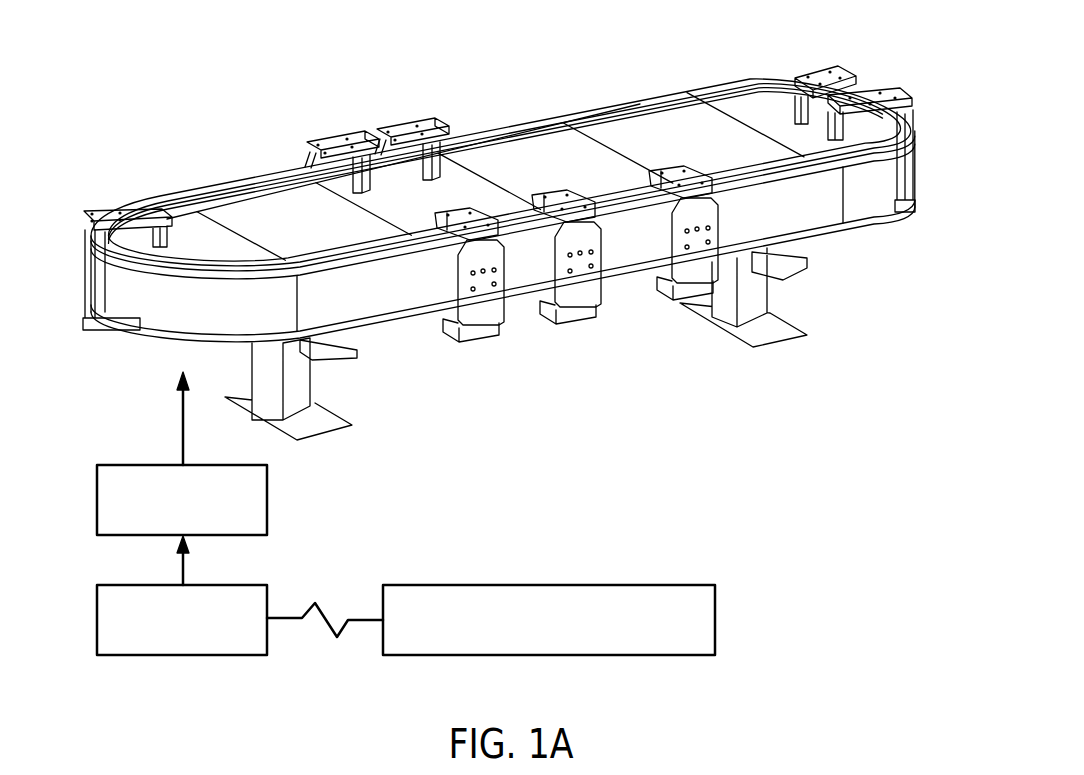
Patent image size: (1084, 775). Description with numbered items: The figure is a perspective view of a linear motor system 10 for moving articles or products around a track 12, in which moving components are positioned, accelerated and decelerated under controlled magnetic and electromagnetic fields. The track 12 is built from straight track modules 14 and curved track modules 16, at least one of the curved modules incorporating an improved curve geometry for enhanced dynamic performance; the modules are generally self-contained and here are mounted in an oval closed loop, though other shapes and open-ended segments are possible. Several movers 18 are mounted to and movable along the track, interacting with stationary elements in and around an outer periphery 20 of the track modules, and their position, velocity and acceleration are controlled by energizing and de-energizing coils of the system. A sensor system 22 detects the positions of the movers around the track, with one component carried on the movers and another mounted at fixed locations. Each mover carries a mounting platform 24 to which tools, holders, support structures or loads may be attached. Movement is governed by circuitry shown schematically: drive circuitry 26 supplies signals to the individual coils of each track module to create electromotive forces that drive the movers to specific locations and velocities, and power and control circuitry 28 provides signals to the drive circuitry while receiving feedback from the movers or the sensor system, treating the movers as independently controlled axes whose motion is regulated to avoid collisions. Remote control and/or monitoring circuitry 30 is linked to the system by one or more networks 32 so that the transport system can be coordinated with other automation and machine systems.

The linear motor system 10 is at (841, 42).
The track 12 is at (240, 307).
The straight track modules 14 is at (432, 283).
The curved track modules 16 is at (165, 309).
The movers 18 is at (396, 135).
The outer periphery 20 is at (347, 302).
The sensor system 22 is at (797, 113).
The mounting platform 24 is at (470, 319).
The drive circuitry 26 is at (268, 496).
The power and control circuitry 28 is at (268, 598).
The remote control and/or monitoring circuitry 30 is at (715, 620).
The networks 32 is at (367, 623).